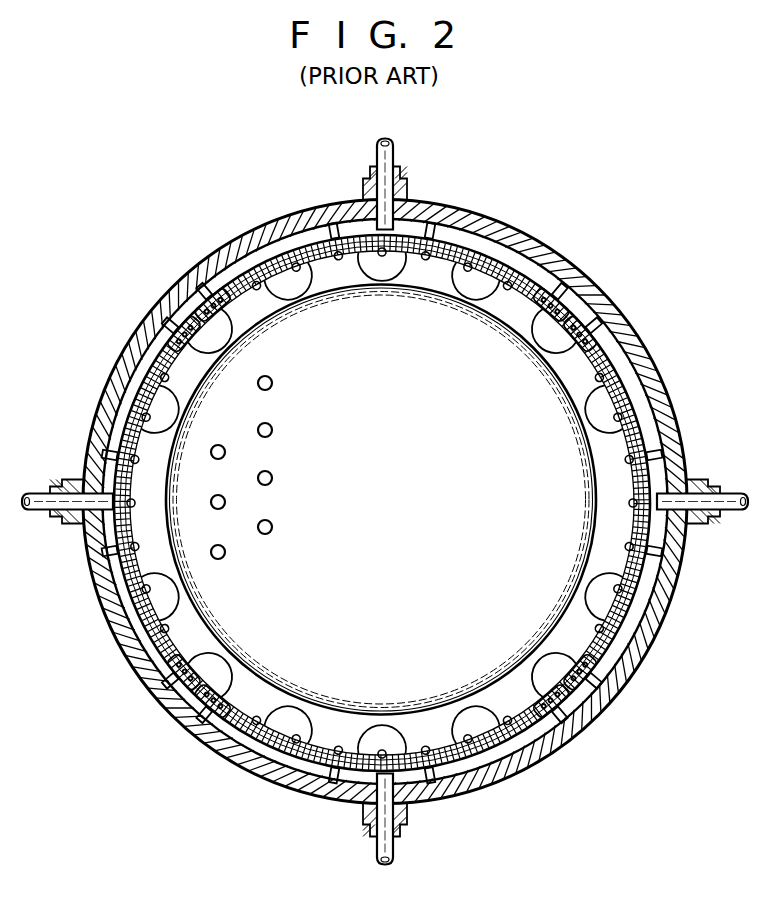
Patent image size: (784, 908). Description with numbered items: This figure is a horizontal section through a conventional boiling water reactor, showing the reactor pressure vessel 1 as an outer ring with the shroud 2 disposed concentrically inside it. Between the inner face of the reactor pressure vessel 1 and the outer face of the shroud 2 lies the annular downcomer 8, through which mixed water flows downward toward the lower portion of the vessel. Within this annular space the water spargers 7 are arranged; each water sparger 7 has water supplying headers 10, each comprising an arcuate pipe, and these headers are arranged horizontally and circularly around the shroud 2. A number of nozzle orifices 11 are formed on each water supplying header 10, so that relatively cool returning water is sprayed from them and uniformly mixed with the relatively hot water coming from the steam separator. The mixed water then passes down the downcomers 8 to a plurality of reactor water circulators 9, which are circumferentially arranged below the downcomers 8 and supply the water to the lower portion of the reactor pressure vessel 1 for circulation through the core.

The reactor pressure vessel 1 is at (668, 452).
The shroud 2 is at (565, 637).
The water sparger 7 is at (472, 237).
The annular downcomer 8 is at (523, 293).
The reactor water circulator 9 is at (290, 285).
The water supplying header 10 is at (240, 243).
The nozzle orifice 11 is at (426, 256).